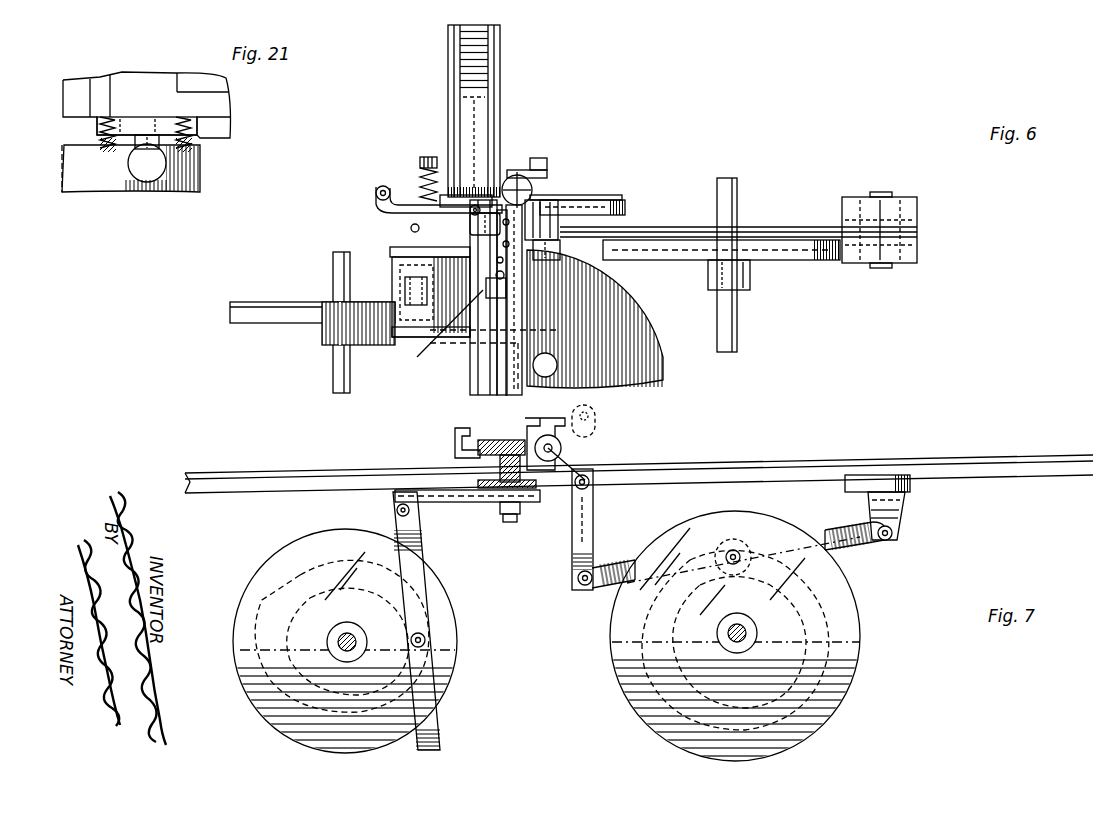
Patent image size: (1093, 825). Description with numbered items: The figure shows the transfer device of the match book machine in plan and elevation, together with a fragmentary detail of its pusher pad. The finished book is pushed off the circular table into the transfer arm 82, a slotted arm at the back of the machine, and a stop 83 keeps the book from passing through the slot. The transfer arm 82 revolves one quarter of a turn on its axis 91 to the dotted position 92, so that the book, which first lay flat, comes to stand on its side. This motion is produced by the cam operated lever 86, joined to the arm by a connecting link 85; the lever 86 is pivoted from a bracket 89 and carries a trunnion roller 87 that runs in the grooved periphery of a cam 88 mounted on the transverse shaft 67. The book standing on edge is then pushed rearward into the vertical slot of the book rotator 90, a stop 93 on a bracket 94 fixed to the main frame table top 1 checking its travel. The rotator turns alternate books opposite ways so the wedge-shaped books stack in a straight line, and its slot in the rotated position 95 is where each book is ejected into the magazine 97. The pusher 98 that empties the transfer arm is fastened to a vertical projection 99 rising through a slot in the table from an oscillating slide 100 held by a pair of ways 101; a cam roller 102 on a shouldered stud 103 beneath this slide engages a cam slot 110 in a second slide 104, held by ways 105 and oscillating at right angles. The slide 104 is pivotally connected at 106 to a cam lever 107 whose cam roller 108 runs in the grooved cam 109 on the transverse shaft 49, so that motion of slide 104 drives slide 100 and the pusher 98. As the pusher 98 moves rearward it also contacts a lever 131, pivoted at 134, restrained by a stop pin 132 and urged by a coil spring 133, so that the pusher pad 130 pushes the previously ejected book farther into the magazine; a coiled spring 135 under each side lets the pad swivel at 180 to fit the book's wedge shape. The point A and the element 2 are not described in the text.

In FIG. 7, the main frame table top 1 is at (1006, 455).
In FIG. 6, the frame quadrant 2 is at (650, 318).
In FIG. 6, the transverse shaft 49 is at (333, 275).
In FIG. 7, the transverse shaft 49 is at (330, 640).
In FIG. 6, the transverse shaft 67 is at (738, 332).
In FIG. 7, the transverse shaft 67 is at (740, 622).
In FIG. 6, the transfer arm 82 is at (626, 208).
In FIG. 7, the transfer arm 82 is at (535, 428).
In FIG. 6, the stop 83 is at (598, 196).
In FIG. 7, the connecting link 85 is at (572, 553).
In FIG. 6, the cam operated lever 86 is at (772, 228).
In FIG. 7, the cam operated lever 86 is at (598, 585).
In FIG. 7, the trunnion roller 87 is at (735, 550).
In FIG. 6, the cam 88 is at (780, 255).
In FIG. 7, the cam 88 is at (822, 628).
In FIG. 6, the bracket 89 is at (902, 200).
In FIG. 7, the bracket 89 is at (898, 508).
In FIG. 6, the book rotator 90 is at (532, 190).
In FIG. 7, the axis 91 is at (556, 438).
In FIG. 7, the rotated position of transfer arm 92 is at (510, 455).
In FIG. 6, the stop 93 is at (517, 176).
In FIG. 6, the bracket 94 is at (540, 165).
In FIG. 6, the slot in rotated position 95 is at (560, 203).
In FIG. 6, the magazine 97 is at (463, 97).
In FIG. 7, the magazine 97 is at (455, 435).
In FIG. 6, the pusher 98 is at (451, 295).
In FIG. 7, the pusher 98 is at (486, 440).
In FIG. 7, the vertical projection 99 is at (558, 452).
In FIG. 6, the oscillating slide 100 is at (506, 296).
In FIG. 7, the oscillating slide 100 is at (478, 482).
In FIG. 6, the ways 101 is at (461, 338).
In FIG. 7, the ways 101 is at (486, 502).
In FIG. 6, the cam roller 102 is at (506, 276).
In FIG. 7, the cam roller 102 is at (508, 517).
In FIG. 7, the shouldered stud 103 is at (516, 523).
In FIG. 6, the slide 104 is at (397, 268).
In FIG. 7, the slide 104 is at (440, 502).
In FIG. 6, the ways 105 is at (398, 255).
In FIG. 7, the ways 105 is at (400, 488).
In FIG. 6, the pivot connection 106 is at (397, 290).
In FIG. 7, the pivot connection 106 is at (397, 511).
In FIG. 7, the cam lever 107 is at (422, 540).
In FIG. 7, the cam roller 108 is at (430, 640).
In FIG. 6, the cam 109 is at (263, 302).
In FIG. 7, the cam 109 is at (275, 592).
In FIG. 6, the cam slot 110 is at (435, 336).
In FIG. 21, the pusher pad 130 is at (147, 115).
In FIG. 6, the pusher pad 130 is at (468, 190).
In FIG. 21, the lever 131 is at (122, 192).
In FIG. 6, the lever 131 is at (380, 210).
In FIG. 6, the stop pin 132 is at (411, 227).
In FIG. 6, the coil spring 133 is at (422, 170).
In FIG. 6, the pivot 134 is at (376, 191).
In FIG. 21, the coiled spring 135 is at (100, 135).
In FIG. 6, the coiled spring 135 is at (482, 190).
In FIG. 21, the swivel 180 is at (152, 185).
In FIG. 6, the swivel 180 is at (480, 236).
In FIG. 6, the pivot A is at (470, 210).